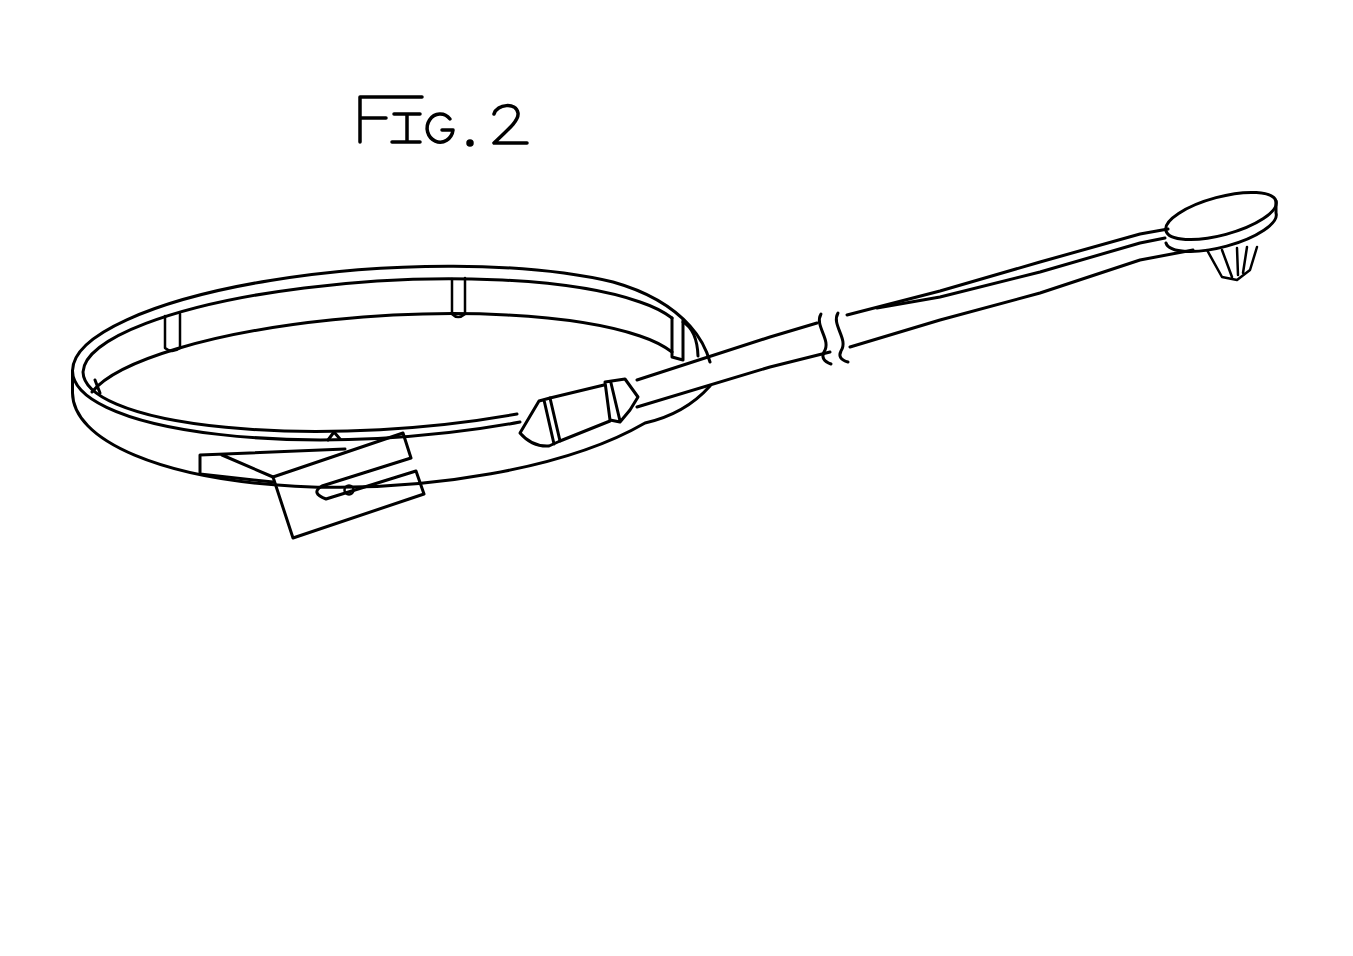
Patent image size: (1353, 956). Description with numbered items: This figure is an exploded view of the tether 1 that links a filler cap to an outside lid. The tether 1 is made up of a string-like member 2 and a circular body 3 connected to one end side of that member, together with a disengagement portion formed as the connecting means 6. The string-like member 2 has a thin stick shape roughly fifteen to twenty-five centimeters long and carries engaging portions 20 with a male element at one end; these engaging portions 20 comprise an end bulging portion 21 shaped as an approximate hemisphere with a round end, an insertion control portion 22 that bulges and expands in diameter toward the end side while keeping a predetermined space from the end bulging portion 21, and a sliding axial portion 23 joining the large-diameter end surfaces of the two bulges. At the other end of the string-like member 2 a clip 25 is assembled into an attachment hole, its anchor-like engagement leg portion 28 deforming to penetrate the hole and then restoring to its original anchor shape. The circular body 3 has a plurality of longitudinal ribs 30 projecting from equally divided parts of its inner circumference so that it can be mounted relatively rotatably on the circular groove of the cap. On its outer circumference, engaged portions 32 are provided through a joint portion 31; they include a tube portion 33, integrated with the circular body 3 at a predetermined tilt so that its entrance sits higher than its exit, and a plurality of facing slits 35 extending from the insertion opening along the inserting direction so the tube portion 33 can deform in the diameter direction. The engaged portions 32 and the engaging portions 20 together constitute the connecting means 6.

The tether 1 is at (797, 147).
The string-like member 2 is at (927, 352).
The circular body 3 is at (435, 322).
The connecting means 6 is at (408, 507).
The engaging portions 20 is at (739, 505).
The end bulging portion 21 is at (543, 443).
The insertion control portion 22 is at (628, 408).
The sliding axial portion 23 is at (590, 415).
The clip 25 is at (1219, 198).
The engagement leg portion 28 is at (1243, 280).
The longitudinal ribs 30 is at (450, 292).
The joint portion 31 is at (240, 473).
The engaged portions 32 is at (424, 569).
The tube portion 33 is at (318, 530).
The slits 35 is at (350, 492).